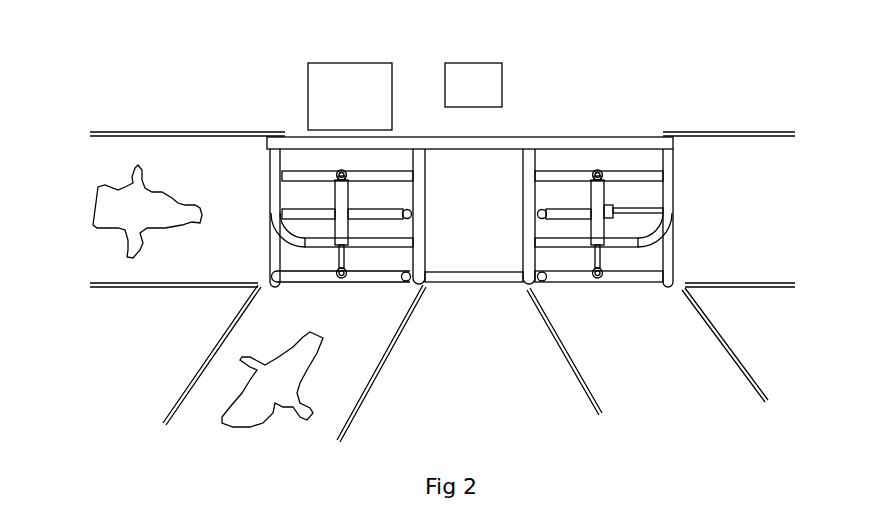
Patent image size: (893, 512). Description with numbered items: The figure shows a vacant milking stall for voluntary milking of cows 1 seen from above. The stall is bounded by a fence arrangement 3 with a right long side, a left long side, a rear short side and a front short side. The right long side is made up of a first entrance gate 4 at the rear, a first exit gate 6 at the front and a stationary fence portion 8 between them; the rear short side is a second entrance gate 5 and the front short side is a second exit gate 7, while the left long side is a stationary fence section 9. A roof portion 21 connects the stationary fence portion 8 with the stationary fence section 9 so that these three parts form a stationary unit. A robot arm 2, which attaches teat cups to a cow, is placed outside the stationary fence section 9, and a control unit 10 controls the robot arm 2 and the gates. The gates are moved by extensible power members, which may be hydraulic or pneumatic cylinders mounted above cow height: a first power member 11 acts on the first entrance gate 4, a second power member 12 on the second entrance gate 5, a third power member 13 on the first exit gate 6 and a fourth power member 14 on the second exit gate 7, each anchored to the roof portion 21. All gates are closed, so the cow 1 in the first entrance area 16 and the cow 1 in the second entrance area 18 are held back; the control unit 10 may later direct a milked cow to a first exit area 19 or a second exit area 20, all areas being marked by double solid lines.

The cow 1 is at (133, 224).
The robot arm 2 is at (325, 80).
The fence arrangement 3 is at (480, 205).
The first entrance gate 4 is at (365, 277).
The second entrance gate 5 is at (277, 257).
The first exit gate 6 is at (618, 277).
The second exit gate 7 is at (670, 247).
The stationary fence portion 8 is at (480, 277).
The stationary fence section 9 is at (583, 143).
The control unit 10 is at (483, 80).
The first power member 11 is at (343, 205).
The second power member 12 is at (378, 215).
The third power member 13 is at (595, 205).
The fourth power member 14 is at (570, 210).
The first entrance area 16 is at (269, 333).
The second entrance area 18 is at (207, 183).
The first exit area 19 is at (640, 376).
The second exit area 20 is at (720, 209).
The roof portion 21 is at (418, 203).